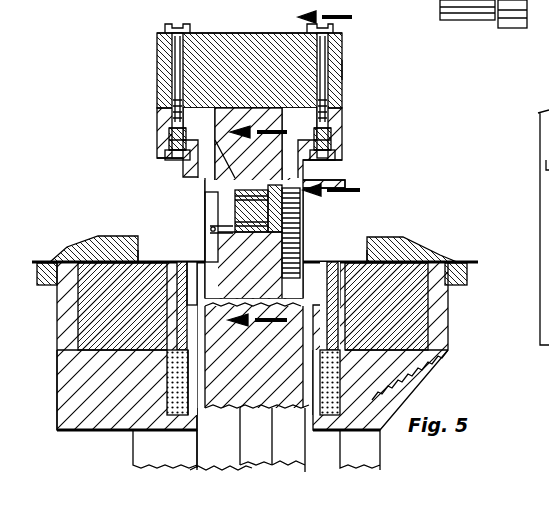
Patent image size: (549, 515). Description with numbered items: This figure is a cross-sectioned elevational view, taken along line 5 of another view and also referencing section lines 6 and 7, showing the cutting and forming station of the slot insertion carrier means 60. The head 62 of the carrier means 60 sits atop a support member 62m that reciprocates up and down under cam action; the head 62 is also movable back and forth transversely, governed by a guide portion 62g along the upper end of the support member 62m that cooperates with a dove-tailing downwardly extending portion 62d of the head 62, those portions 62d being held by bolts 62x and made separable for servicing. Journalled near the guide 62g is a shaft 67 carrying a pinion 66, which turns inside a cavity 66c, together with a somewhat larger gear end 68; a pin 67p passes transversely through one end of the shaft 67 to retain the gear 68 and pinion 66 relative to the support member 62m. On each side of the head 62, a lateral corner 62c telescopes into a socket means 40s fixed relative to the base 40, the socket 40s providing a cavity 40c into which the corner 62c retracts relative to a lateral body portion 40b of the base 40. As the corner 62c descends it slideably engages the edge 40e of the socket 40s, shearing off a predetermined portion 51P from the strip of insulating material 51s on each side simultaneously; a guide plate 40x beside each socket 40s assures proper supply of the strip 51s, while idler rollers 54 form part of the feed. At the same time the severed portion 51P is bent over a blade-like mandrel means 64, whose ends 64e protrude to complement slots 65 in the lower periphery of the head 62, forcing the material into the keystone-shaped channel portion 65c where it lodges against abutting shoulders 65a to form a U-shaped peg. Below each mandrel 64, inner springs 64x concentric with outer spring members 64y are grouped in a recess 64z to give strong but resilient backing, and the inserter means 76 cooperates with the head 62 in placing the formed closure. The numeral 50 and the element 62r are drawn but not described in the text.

The section line 5— 5 is at (515, 22).
The section line 6— 6 is at (257, 216).
The section line 7— 7 is at (338, 110).
The base or support means 40 is at (252, 346).
The lateral body portion 40b is at (90, 432).
The cavity 40c is at (160, 304).
The edge of the socket 40e is at (160, 283).
The socket means 40s is at (60, 362).
The guide plate 40x is at (83, 243).
The support block 50 is at (57, 425).
The predetermined portion of the strip 51P is at (190, 262).
The strip of insulating material 51s is at (40, 264).
The rollers 54 is at (481, 14).
The slot insertion carrier means 60 is at (157, 36).
The head 62 is at (250, 33).
The lateral opposite corners of the head 62c is at (168, 160).
The dove-tailing downwardly extending portion 62d is at (160, 140).
The guide portion 62g is at (342, 70).
The support member 62m is at (238, 404).
The head rib 62r is at (345, 184).
The fastening means or bolts 62x is at (178, 72).
The blade-like mandrel means or projection 64 is at (177, 342).
The ends of the mandrel means 64e is at (165, 262).
The inner springs 64x is at (167, 380).
The outer spring members 64y is at (167, 392).
The recess or cavity 64z is at (175, 433).
The slots 65 is at (173, 160).
The abutting shoulders 65a is at (170, 150).
The C-shaped channel portion 65c is at (164, 132).
The pinion or externally toothed gear 66 is at (258, 200).
The cavity 66c is at (233, 180).
The shaft 67 is at (255, 297).
The pin 67p is at (210, 226).
The larger gear end 68 is at (302, 216).
The inserter means 76 is at (168, 147).